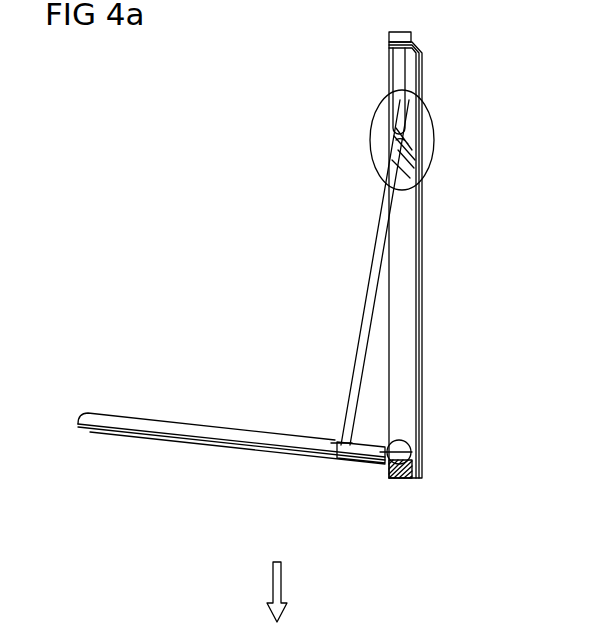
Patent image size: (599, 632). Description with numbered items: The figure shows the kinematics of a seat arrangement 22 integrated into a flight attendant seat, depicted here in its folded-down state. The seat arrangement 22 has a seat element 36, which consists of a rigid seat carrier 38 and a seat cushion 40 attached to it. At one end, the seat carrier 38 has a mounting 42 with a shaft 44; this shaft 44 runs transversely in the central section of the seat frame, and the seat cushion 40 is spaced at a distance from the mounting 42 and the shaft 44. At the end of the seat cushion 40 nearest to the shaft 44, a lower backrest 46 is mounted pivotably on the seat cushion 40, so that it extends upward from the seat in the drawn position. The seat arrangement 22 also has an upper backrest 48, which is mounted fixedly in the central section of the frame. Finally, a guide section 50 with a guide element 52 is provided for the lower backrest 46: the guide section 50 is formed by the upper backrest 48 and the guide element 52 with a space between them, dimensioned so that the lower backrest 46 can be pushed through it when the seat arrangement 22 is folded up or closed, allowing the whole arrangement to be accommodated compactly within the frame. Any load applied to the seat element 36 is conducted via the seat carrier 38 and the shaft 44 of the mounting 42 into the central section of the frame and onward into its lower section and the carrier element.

The seat arrangement 22 is at (233, 112).
The seat element 36 is at (187, 424).
The seat carrier 38 is at (358, 466).
The seat cushion 40 is at (216, 447).
The mounting 42 is at (408, 437).
The shaft 44 is at (422, 467).
The lower backrest 46 is at (368, 292).
The upper backrest 48 is at (395, 70).
The guide section 50 is at (430, 118).
The guide element 52 is at (431, 160).